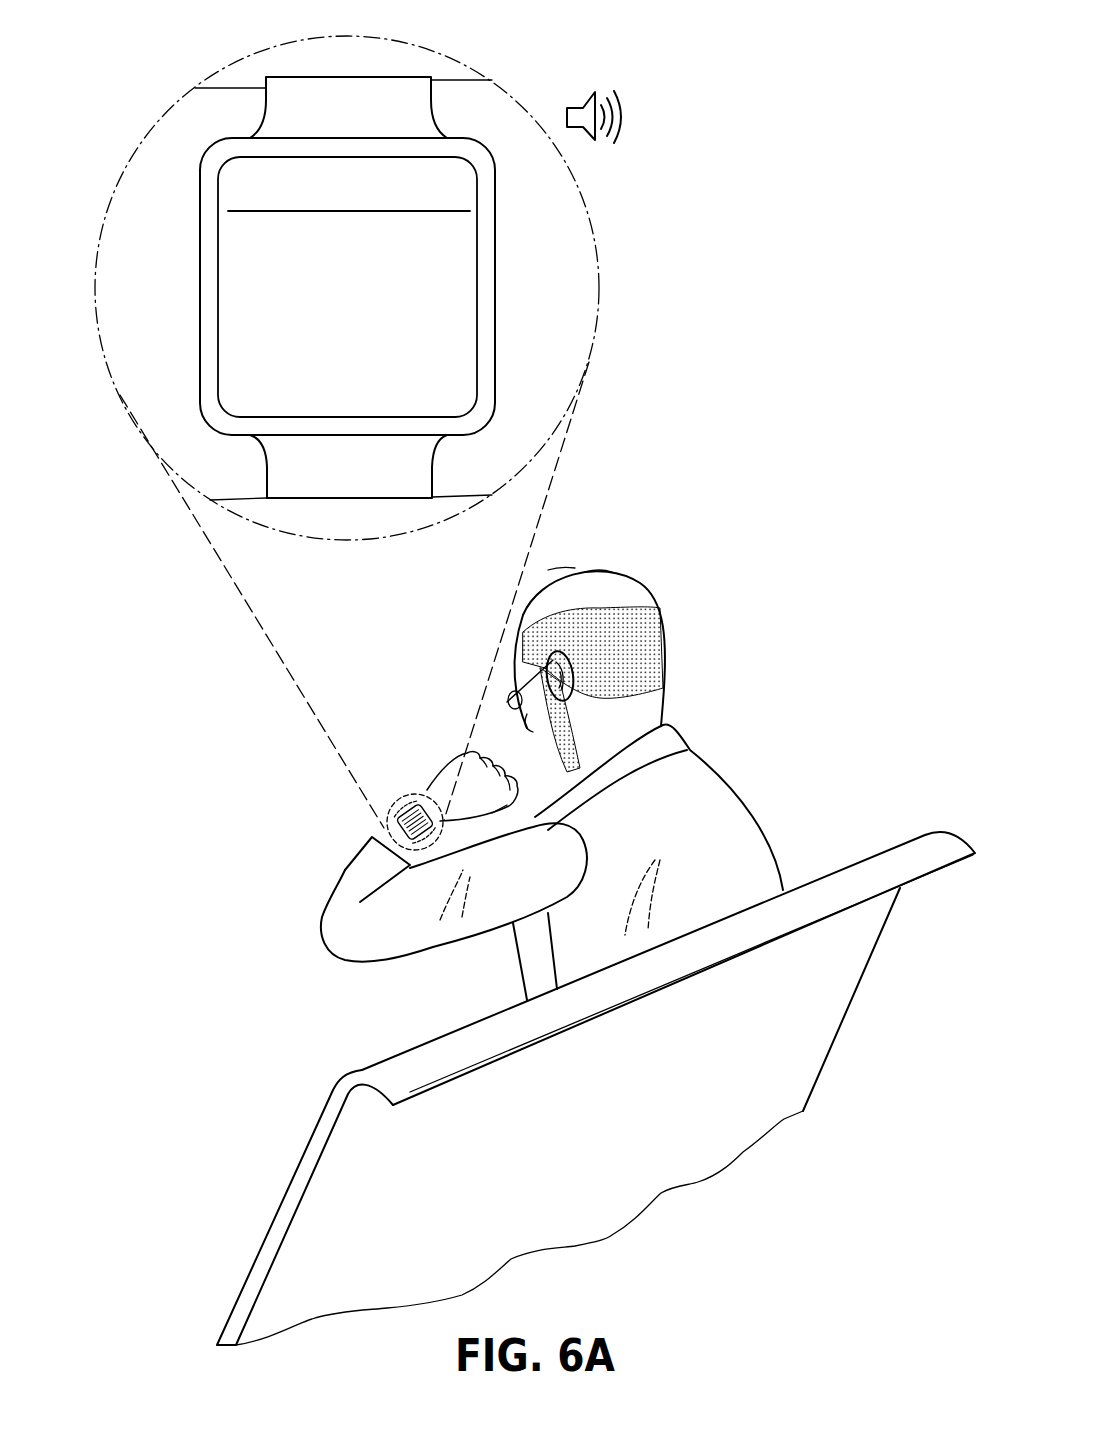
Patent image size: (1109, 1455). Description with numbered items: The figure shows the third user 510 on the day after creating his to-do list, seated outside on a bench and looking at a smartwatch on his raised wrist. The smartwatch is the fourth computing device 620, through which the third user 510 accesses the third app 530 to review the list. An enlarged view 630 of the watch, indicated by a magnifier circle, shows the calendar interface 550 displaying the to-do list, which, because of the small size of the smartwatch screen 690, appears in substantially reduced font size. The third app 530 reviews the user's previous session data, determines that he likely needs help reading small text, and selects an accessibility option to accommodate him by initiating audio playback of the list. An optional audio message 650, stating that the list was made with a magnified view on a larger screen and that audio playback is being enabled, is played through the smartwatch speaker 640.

The third user 510 is at (718, 792).
The third app 530 is at (430, 800).
The calendar interface 550 is at (448, 298).
The fourth computing device 620 is at (385, 829).
The magnified view of wearable device 630 is at (223, 192).
The smartwatch speaker 640 is at (600, 82).
The audio message 650 is at (752, 258).
The smartwatch screen 690 is at (309, 410).